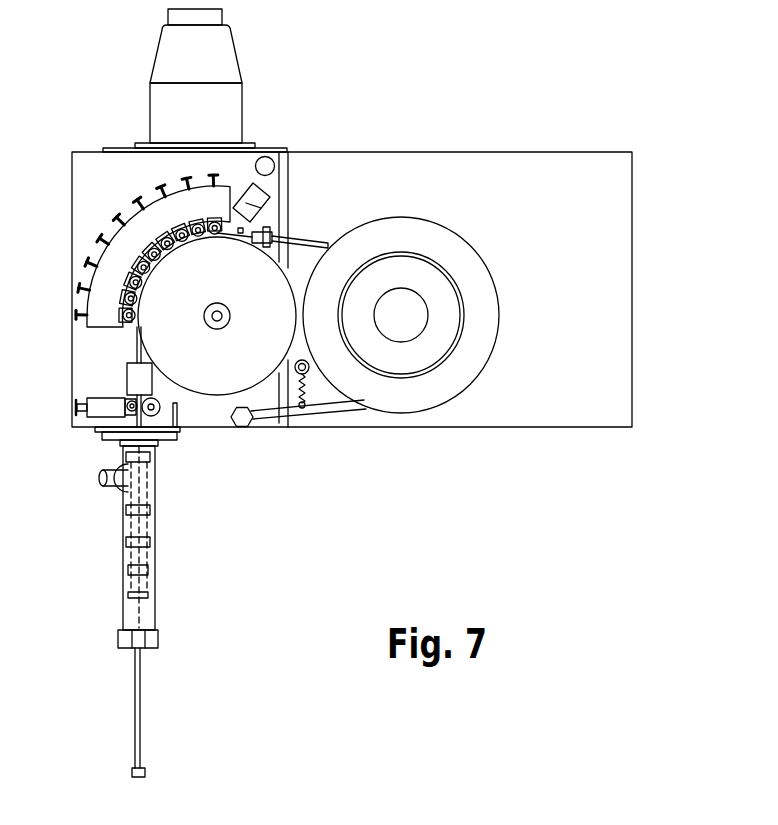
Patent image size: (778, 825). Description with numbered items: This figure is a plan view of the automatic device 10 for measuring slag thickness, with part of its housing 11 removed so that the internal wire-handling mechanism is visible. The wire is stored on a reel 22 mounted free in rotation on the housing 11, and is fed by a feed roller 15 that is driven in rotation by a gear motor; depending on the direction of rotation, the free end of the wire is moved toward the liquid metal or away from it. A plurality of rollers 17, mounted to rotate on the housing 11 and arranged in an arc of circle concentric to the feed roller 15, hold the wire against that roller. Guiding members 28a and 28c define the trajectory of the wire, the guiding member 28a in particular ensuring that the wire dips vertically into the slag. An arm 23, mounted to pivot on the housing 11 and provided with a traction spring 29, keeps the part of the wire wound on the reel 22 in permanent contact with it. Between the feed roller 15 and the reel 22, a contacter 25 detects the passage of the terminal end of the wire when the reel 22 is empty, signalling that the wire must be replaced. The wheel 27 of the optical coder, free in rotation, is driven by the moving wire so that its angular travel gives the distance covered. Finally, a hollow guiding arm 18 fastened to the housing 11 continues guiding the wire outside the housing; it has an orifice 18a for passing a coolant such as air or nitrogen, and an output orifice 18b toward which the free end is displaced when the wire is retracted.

The device for measuring slag thickness 10 is at (472, 134).
The housing 11 is at (563, 185).
The feed roller 15 is at (172, 276).
The rollers 17 is at (130, 326).
The guiding arm 18 is at (157, 494).
The orifice 18a is at (100, 474).
The output orifice 18b is at (138, 653).
The reel 22 is at (467, 272).
The arm 23 is at (308, 425).
The contacter 25 is at (243, 206).
The wheel 27 is at (160, 407).
The guiding member 28a is at (143, 693).
The guiding member 28c is at (300, 236).
The traction spring 29 is at (306, 388).